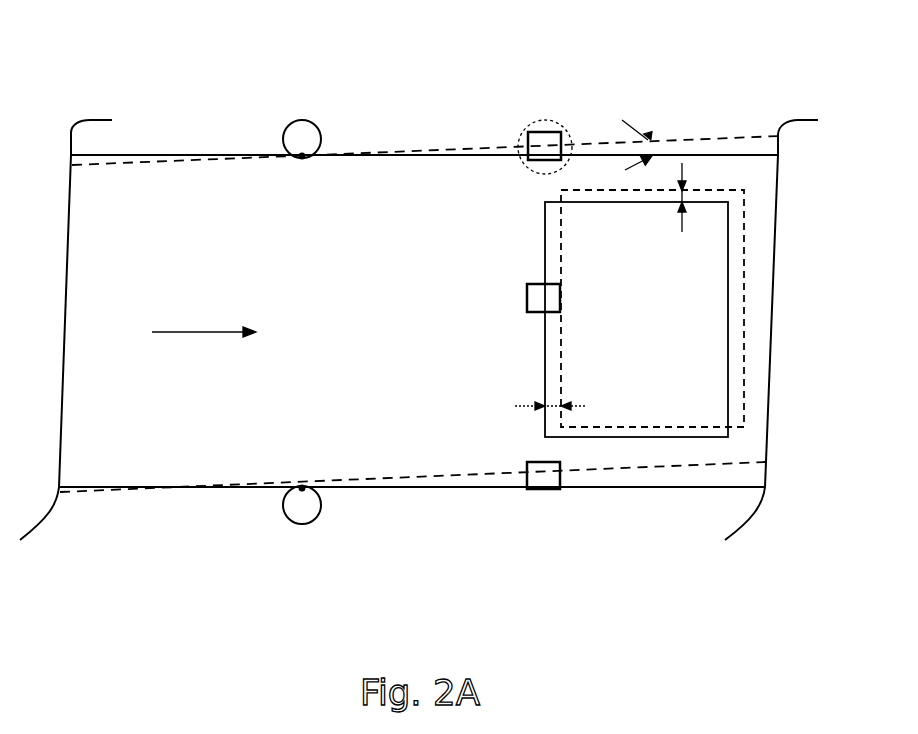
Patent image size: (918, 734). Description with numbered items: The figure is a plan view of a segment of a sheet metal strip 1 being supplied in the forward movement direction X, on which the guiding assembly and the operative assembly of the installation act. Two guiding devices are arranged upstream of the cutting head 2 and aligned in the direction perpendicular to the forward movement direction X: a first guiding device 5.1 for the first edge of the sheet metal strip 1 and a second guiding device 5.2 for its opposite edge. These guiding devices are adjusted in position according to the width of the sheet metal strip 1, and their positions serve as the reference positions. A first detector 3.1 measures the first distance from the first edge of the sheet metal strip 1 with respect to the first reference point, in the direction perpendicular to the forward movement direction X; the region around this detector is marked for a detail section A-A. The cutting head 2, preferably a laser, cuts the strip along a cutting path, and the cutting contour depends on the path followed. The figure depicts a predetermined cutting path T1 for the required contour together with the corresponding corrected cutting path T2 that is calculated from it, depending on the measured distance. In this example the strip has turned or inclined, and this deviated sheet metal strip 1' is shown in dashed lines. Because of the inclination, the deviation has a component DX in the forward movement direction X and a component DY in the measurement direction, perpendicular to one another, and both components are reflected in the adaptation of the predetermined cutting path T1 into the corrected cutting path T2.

The sheet metal strip 1 is at (419, 285).
The deviated sheet metal strip 1' is at (420, 264).
The first guiding device 5.1 is at (300, 138).
The second guiding device 5.2 is at (298, 508).
The first detector 3.1 is at (545, 140).
The cutting head 2 is at (530, 298).
The section line A-A is at (570, 137).
The deviation component in measurement direction DY is at (687, 193).
The deviation component in forward movement direction DX is at (553, 410).
The predetermined cutting path T1 is at (615, 440).
The corrected cutting path T2 is at (645, 430).
The forward movement direction X is at (204, 357).